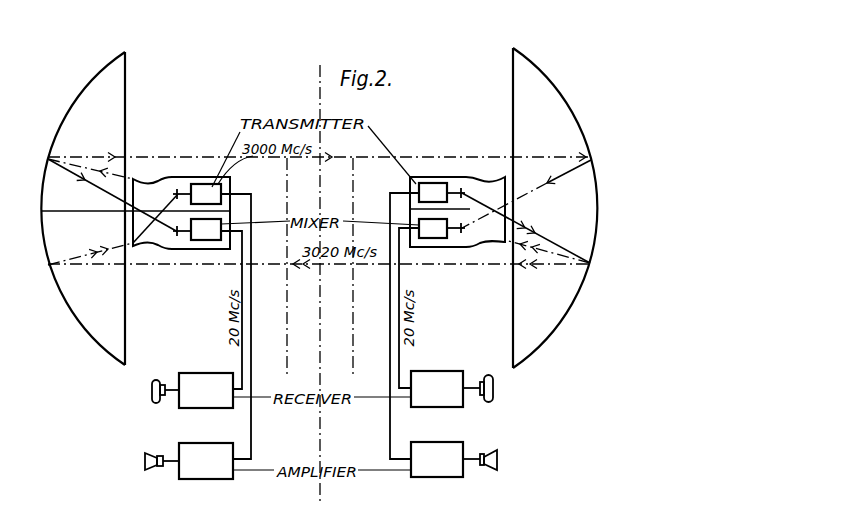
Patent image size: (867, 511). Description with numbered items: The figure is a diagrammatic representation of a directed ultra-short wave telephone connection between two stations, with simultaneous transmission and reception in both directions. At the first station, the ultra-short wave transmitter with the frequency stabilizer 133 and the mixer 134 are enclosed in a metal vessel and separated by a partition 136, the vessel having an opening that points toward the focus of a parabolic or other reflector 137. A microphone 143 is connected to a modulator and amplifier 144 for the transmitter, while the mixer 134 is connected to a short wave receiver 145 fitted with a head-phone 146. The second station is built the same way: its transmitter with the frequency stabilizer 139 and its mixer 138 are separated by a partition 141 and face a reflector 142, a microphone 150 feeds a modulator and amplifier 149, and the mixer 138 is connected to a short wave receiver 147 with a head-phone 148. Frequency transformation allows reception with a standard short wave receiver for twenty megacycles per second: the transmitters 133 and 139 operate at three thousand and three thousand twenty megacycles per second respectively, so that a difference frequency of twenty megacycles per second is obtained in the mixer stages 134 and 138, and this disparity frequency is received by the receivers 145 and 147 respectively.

The transmitter with frequency stabilizer 133 is at (201, 188).
The mixer 134 is at (205, 236).
The partition 136 is at (172, 212).
The reflector 137 is at (85, 88).
The mixer 138 is at (438, 240).
The transmitter with frequency stabilizer 139 is at (426, 189).
The partition 141 is at (468, 211).
The reflector 142 is at (545, 75).
The microphone 143 is at (145, 461).
The modulator and amplifier 144 is at (206, 461).
The short wave receiver 145 is at (206, 390).
The head-phone 146 is at (151, 390).
The short wave receiver 147 is at (437, 389).
The head-phone 148 is at (495, 388).
The modulator and amplifier 149 is at (437, 459).
The microphone 150 is at (497, 460).